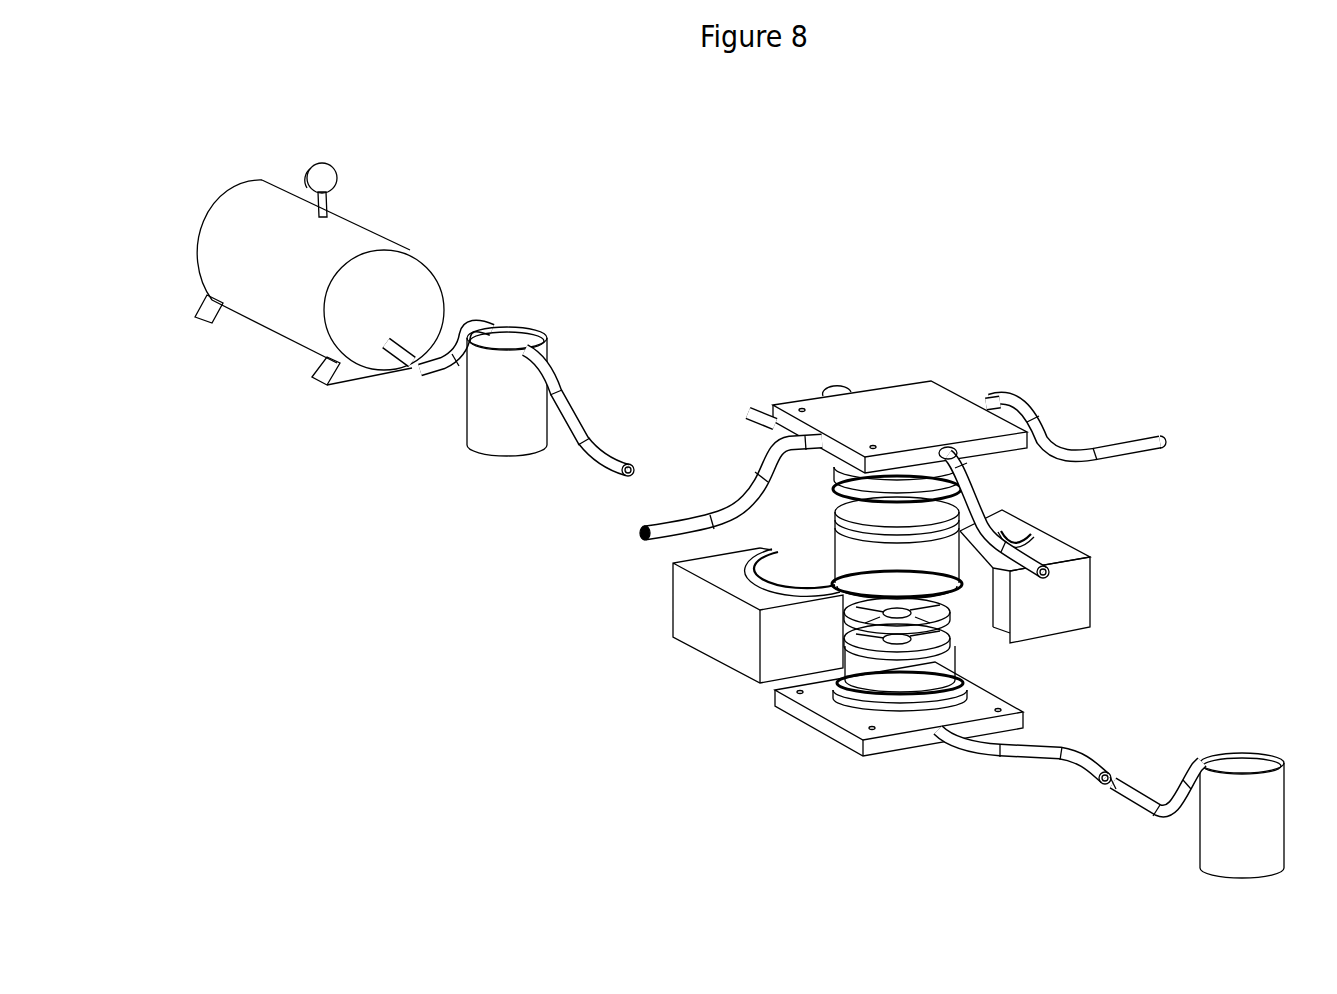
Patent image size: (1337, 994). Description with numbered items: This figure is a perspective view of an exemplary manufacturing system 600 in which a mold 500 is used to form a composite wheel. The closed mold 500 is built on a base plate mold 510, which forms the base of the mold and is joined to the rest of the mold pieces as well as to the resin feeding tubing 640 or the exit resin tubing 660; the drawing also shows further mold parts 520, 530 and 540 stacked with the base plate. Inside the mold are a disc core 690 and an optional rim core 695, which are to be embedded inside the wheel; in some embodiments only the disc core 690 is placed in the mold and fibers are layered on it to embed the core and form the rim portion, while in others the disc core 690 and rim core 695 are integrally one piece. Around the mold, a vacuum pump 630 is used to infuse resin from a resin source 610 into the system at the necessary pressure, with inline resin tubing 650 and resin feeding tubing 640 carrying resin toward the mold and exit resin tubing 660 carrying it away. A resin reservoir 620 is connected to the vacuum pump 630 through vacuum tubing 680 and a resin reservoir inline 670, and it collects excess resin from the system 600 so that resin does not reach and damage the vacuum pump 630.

The mold 500 is at (926, 408).
The base plate mold 510 is at (998, 428).
The clamp block 520 is at (1097, 590).
The fitting 530 is at (1003, 413).
The lower cylinder 540 is at (902, 672).
The manufacturing system 600 is at (758, 272).
The resin source 610 is at (878, 758).
The resin reservoir 620 is at (534, 325).
The vacuum pump 630 is at (407, 250).
The resin feeding tubing 640 is at (1123, 803).
The inline resin tubing 650 is at (1087, 782).
The exit resin tubing 660 is at (753, 402).
The resin reservoir inline 670 is at (613, 452).
The vacuum tubing 680 is at (470, 310).
The disc core 690 is at (934, 632).
The rim core 695 is at (930, 562).